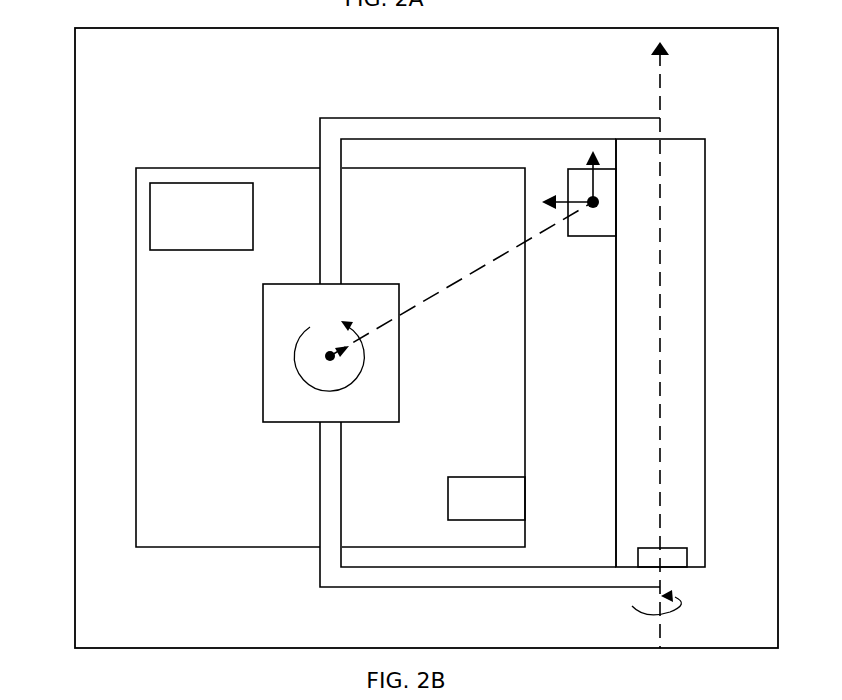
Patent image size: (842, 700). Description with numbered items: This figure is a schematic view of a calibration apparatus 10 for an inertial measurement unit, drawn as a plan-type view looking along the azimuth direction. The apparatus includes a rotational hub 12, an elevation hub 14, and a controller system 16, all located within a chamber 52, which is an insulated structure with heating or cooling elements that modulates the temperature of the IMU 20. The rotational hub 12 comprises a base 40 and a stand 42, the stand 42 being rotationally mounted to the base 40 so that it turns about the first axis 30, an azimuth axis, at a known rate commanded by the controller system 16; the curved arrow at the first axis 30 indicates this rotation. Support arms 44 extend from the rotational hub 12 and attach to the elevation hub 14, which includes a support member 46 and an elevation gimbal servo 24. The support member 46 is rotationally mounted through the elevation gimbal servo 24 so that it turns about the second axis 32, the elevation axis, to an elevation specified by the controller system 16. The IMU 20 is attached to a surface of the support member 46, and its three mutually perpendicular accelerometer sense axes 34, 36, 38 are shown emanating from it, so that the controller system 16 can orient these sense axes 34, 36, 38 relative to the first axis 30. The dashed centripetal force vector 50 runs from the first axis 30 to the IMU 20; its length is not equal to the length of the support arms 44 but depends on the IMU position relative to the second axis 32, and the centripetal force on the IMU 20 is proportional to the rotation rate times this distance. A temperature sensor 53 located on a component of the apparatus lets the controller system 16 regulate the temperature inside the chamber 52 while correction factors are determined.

The calibration apparatus 10 is at (50, 48).
The rotational hub 12 is at (150, 461).
The elevation hub 14 is at (618, 404).
The controller system 16 is at (212, 183).
The IMU 20 is at (597, 238).
The elevation gimbal servo 24 is at (670, 547).
The first axis 30 is at (333, 358).
The second axis 32 is at (658, 108).
The sense axis 34 is at (598, 202).
The sense axis 36 is at (540, 203).
The sense axis 38 is at (586, 155).
The base 40 is at (136, 335).
The stand 42 is at (263, 343).
The support arms 44 is at (393, 118).
The support member 46 is at (617, 460).
The centripetal force vector 50 is at (468, 275).
The chamber 52 is at (75, 279).
The temperature sensor 53 is at (491, 477).